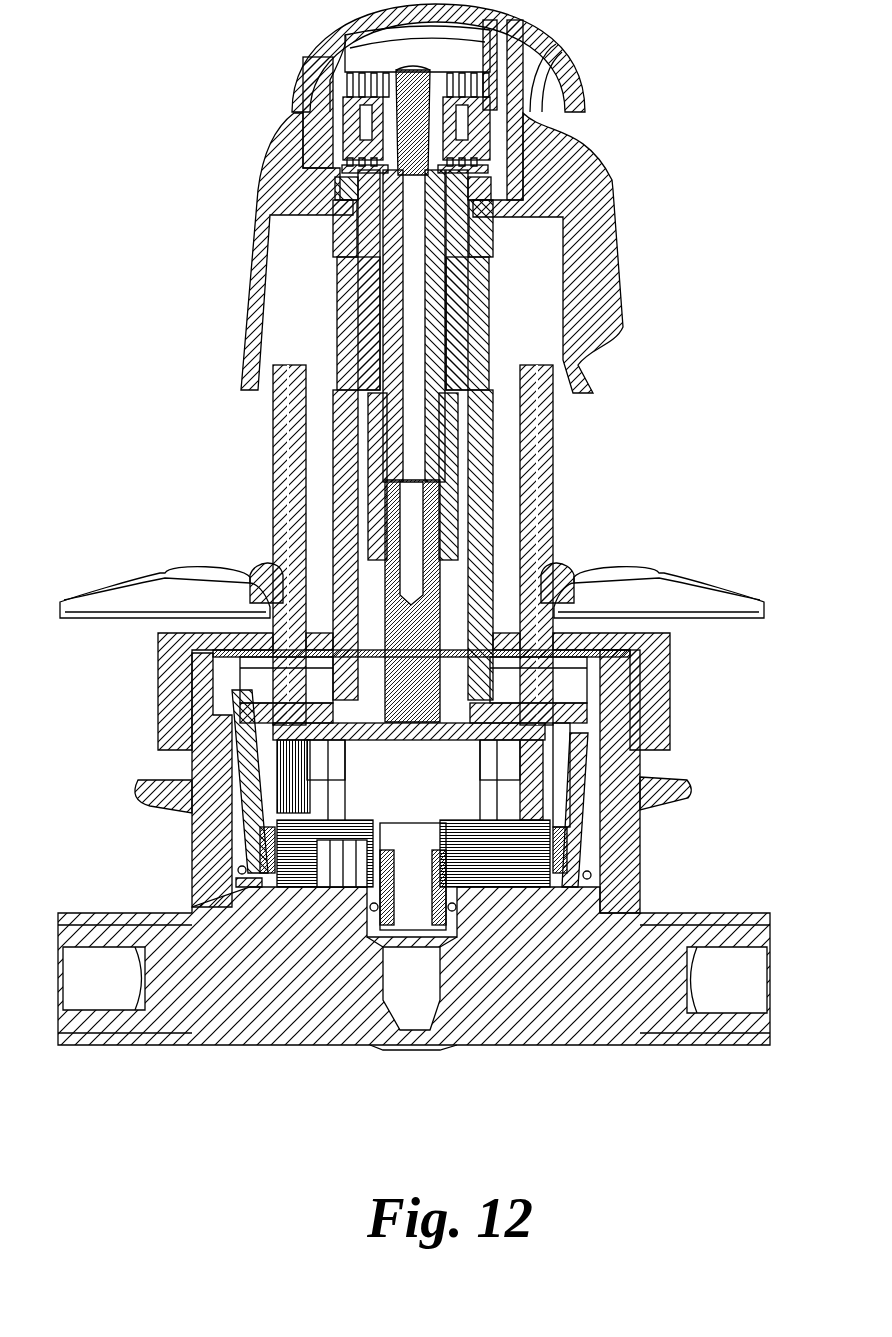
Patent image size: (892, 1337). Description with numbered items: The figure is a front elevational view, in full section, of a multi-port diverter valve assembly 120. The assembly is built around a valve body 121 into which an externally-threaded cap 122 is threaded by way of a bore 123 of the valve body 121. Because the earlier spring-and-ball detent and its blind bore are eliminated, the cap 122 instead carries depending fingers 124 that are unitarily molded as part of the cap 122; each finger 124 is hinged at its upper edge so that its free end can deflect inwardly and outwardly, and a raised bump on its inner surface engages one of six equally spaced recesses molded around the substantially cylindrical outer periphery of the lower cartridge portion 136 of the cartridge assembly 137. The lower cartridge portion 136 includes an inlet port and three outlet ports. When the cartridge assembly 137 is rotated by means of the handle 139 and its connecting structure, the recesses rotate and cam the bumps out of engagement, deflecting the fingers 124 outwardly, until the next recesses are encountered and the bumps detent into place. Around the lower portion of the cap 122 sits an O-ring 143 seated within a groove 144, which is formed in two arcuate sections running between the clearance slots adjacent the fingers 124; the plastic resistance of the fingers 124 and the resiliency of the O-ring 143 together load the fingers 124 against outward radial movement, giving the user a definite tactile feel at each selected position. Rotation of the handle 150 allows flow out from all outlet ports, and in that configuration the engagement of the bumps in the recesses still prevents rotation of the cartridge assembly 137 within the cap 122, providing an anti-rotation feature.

The multi-port diverter valve assembly 120 is at (695, 440).
The valve body 121 is at (633, 963).
The externally-threaded cap 122 is at (587, 795).
The bore 123 is at (600, 848).
The depending finger 124 is at (590, 855).
The lower cartridge portion 136 is at (255, 852).
The cartridge assembly 137 is at (590, 770).
The handle 139 is at (588, 74).
The O-ring 143 is at (237, 877).
The groove 144 is at (247, 898).
The handle 150 is at (620, 247).